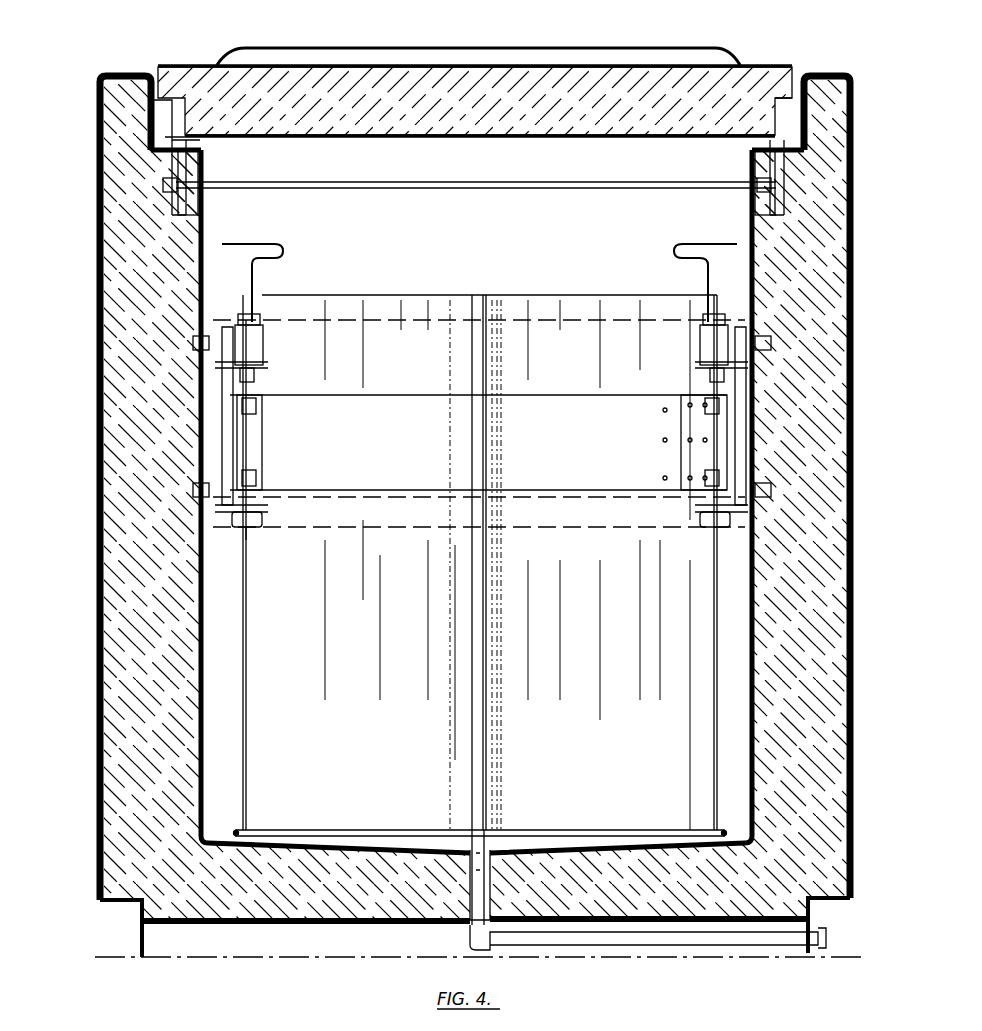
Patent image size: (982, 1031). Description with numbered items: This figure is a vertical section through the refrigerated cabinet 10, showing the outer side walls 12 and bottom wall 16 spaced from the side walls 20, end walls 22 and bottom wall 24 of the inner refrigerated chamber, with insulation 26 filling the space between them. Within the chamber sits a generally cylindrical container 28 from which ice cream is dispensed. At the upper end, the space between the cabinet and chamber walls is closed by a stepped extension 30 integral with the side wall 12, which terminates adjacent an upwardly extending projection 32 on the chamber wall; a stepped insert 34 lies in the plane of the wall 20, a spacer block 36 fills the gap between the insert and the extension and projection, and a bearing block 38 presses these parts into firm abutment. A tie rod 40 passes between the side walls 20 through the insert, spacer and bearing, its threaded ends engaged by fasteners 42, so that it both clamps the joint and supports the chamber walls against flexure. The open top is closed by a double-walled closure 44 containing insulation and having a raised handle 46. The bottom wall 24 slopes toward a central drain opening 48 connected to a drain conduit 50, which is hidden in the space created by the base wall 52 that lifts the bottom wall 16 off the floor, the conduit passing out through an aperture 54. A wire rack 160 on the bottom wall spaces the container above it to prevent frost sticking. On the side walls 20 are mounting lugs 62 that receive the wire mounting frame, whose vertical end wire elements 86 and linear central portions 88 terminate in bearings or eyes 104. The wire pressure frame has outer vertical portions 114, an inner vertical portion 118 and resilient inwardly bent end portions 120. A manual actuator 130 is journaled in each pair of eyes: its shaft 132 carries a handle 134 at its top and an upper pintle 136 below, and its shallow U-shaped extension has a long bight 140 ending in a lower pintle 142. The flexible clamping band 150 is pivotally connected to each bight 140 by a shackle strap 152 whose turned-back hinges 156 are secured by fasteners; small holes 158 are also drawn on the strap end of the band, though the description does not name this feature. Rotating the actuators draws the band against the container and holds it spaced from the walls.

The cabinet 10 is at (168, 976).
The side walls 12 is at (101, 532).
The bottom wall 16 is at (349, 922).
The side walls 20 is at (207, 237).
The end walls 22 is at (535, 224).
The bottom wall 24 is at (537, 830).
The insulation 26 is at (160, 162).
The cylindrical containers 28 is at (525, 295).
The stepped extension 30 is at (144, 124).
The projection 32 is at (204, 195).
The stepped insert 34 is at (204, 150).
The spacer block 36 is at (204, 170).
The bearing block 38 is at (189, 205).
The tie rod 40 is at (572, 182).
The threaded fasteners 42 is at (176, 182).
The closures 44 is at (192, 65).
The handle 46 is at (454, 48).
The drain opening 48 is at (478, 855).
The drain conduit 50 is at (594, 940).
The base wall 52 is at (152, 950).
The apertures 54 is at (142, 938).
The mounting lugs 62 is at (756, 485).
The vertical end wire elements 86 is at (244, 434).
The linear central portion 88 is at (214, 500).
The bearings or eyes 104 is at (269, 364).
The vertical outer wire portions 114 is at (266, 344).
The inner vertical wire portion 118 is at (264, 318).
The end portions 120 is at (254, 533).
The manual actuator 130 is at (296, 237).
The shaft 132 is at (254, 278).
The handle 134 is at (264, 244).
The upper pintle 136 is at (258, 375).
The bight 140 is at (690, 440).
The lower pintle 142 is at (262, 527).
The clamping band 150 is at (359, 410).
The shackle strap 152 is at (680, 430).
The hinges 156 is at (262, 480).
The holes 158 is at (664, 478).
The wire rack 160 is at (594, 838).